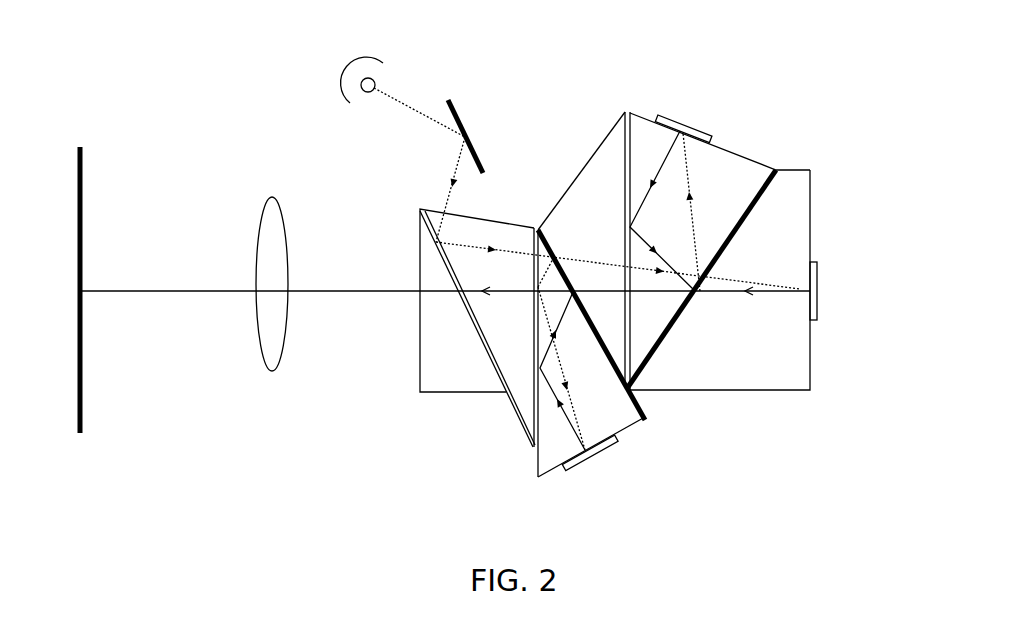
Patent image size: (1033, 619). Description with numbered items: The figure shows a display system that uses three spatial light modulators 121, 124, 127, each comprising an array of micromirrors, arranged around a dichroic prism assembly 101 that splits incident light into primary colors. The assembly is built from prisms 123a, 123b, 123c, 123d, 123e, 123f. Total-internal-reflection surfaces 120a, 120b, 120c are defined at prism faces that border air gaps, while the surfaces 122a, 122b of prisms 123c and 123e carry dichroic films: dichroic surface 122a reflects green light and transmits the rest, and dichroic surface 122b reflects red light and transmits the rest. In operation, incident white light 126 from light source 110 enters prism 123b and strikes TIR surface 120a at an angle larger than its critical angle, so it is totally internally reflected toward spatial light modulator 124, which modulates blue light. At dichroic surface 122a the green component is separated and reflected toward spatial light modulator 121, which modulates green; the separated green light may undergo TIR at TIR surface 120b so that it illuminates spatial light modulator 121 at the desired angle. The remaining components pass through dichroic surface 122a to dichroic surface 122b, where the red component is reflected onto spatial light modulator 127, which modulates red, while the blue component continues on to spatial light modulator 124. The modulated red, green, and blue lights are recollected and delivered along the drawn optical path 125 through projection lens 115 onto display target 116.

The dichroic prism assembly 101 is at (613, 127).
The light source 110 is at (388, 53).
The projection lens 115 is at (274, 198).
The display target 116 is at (82, 167).
The TIR surface 120a is at (522, 425).
The TIR surface 120b is at (537, 475).
The TIR surface 120c is at (632, 118).
The spatial light modulator 121 is at (627, 481).
The dichroic surface 122a is at (648, 413).
The dichroic surface 122b is at (777, 183).
The prism 123a is at (480, 382).
The prism 123b is at (527, 336).
The prism 123c is at (634, 427).
The prism 123d is at (617, 226).
The prism 123e is at (754, 193).
The prism 123f is at (785, 382).
The spatial light modulator 124 is at (864, 302).
The optical axis 125 is at (376, 287).
The incident white light 126 is at (419, 144).
The spatial light modulator 127 is at (708, 112).